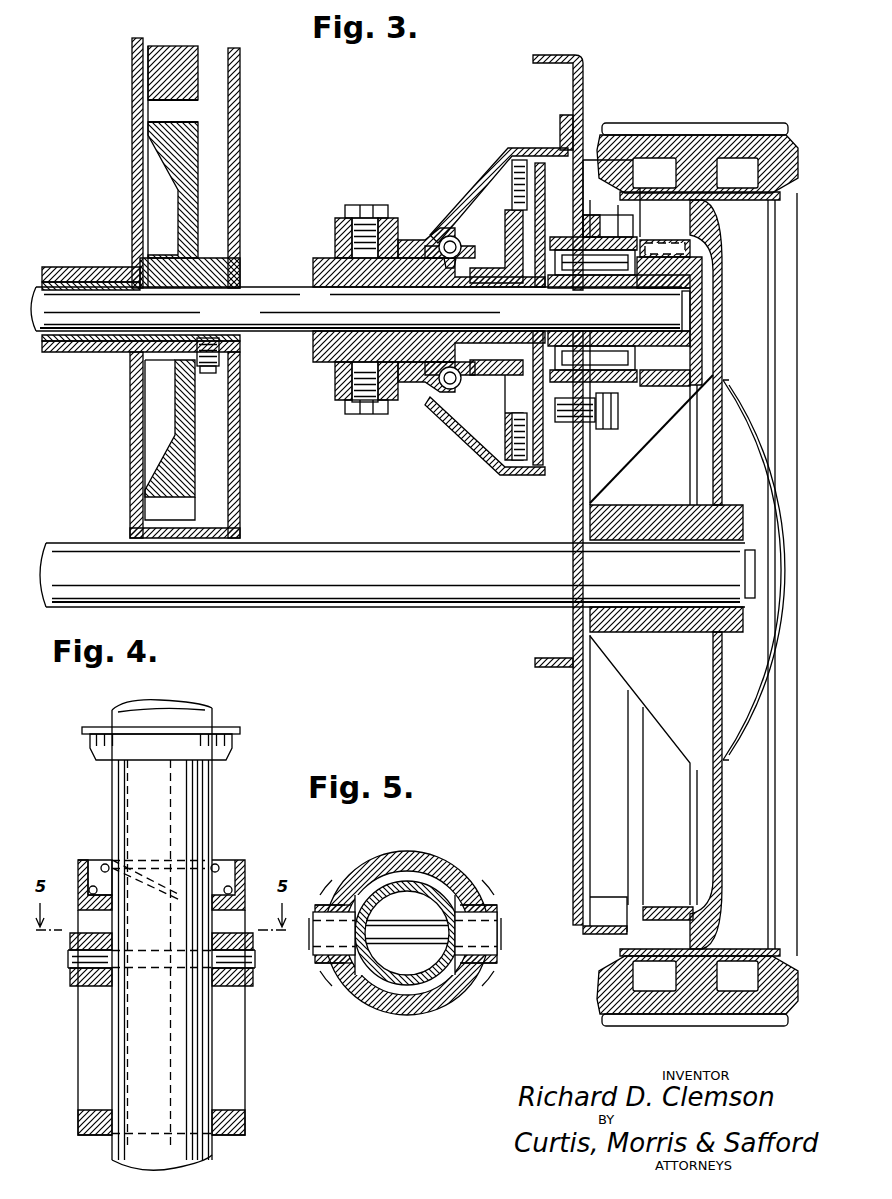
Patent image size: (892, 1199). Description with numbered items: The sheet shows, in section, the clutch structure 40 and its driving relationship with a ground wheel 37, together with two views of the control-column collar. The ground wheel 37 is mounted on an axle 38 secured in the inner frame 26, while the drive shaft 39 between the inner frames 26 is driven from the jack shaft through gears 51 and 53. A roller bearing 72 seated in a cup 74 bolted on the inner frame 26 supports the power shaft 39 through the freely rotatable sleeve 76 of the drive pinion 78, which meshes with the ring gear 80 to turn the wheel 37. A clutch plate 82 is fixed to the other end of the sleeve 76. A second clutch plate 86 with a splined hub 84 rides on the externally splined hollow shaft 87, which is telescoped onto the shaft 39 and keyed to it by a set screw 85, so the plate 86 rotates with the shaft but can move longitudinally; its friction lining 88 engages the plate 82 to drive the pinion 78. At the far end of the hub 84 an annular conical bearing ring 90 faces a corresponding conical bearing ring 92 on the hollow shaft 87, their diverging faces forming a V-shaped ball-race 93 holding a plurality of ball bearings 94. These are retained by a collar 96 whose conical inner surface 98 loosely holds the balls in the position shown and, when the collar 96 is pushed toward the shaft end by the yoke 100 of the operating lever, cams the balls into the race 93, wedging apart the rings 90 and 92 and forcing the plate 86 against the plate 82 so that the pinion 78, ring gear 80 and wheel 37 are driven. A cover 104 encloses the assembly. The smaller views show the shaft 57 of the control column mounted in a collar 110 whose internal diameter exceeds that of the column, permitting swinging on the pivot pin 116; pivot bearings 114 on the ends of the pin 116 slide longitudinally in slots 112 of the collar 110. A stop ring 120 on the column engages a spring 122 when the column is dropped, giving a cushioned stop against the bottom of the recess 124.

In FIG. 3, the inner frame 26 is at (572, 80).
In FIG. 3, the ground wheel 37 is at (738, 140).
In FIG. 3, the axle 38 is at (312, 564).
In FIG. 3, the drive shaft 39 is at (262, 302).
In FIG. 3, the clutch 40 is at (435, 145).
In FIG. 3, the gear 51 is at (168, 69).
In FIG. 3, the gear 53 is at (170, 154).
In FIG. 4, the shaft of the control column 57 is at (136, 800).
In FIG. 5, the shaft of the control column 57 is at (390, 990).
In FIG. 3, the roller bearing 72 is at (615, 272).
In FIG. 3, the cup 74 is at (574, 240).
In FIG. 3, the sleeve 76 is at (600, 338).
In FIG. 3, the drive pinion 78 is at (657, 242).
In FIG. 3, the ring gear 80 is at (695, 250).
In FIG. 3, the clutch plate 82 is at (546, 420).
In FIG. 3, the splined hub 84 is at (462, 372).
In FIG. 3, the set screw 85 is at (318, 364).
In FIG. 3, the clutch plate 86 is at (500, 425).
In FIG. 3, the hollow shaft 87 is at (418, 330).
In FIG. 3, the friction lining 88 is at (524, 445).
In FIG. 3, the conical bearing ring 90 is at (470, 252).
In FIG. 3, the conical bearing ring 92 is at (429, 274).
In FIG. 3, the ball-race 93 is at (450, 258).
In FIG. 3, the ball bearings 94 is at (458, 238).
In FIG. 3, the collar 96 is at (336, 229).
In FIG. 3, the conical inner surface 98 is at (432, 228).
In FIG. 3, the yoke 100 is at (342, 216).
In FIG. 3, the cover 104 is at (490, 180).
In FIG. 4, the collar 110 is at (232, 1135).
In FIG. 5, the collar 110 is at (420, 1012).
In FIG. 4, the slots 112 is at (88, 1106).
In FIG. 5, the slots 112 is at (346, 902).
In FIG. 4, the pivot bearings 114 is at (82, 988).
In FIG. 5, the pivot bearings 114 is at (488, 918).
In FIG. 4, the pivot pin 116 is at (82, 950).
In FIG. 5, the pivot pin 116 is at (386, 930).
In FIG. 4, the stop ring 120 is at (104, 746).
In FIG. 4, the spring 122 is at (218, 860).
In FIG. 4, the recess 124 is at (232, 862).